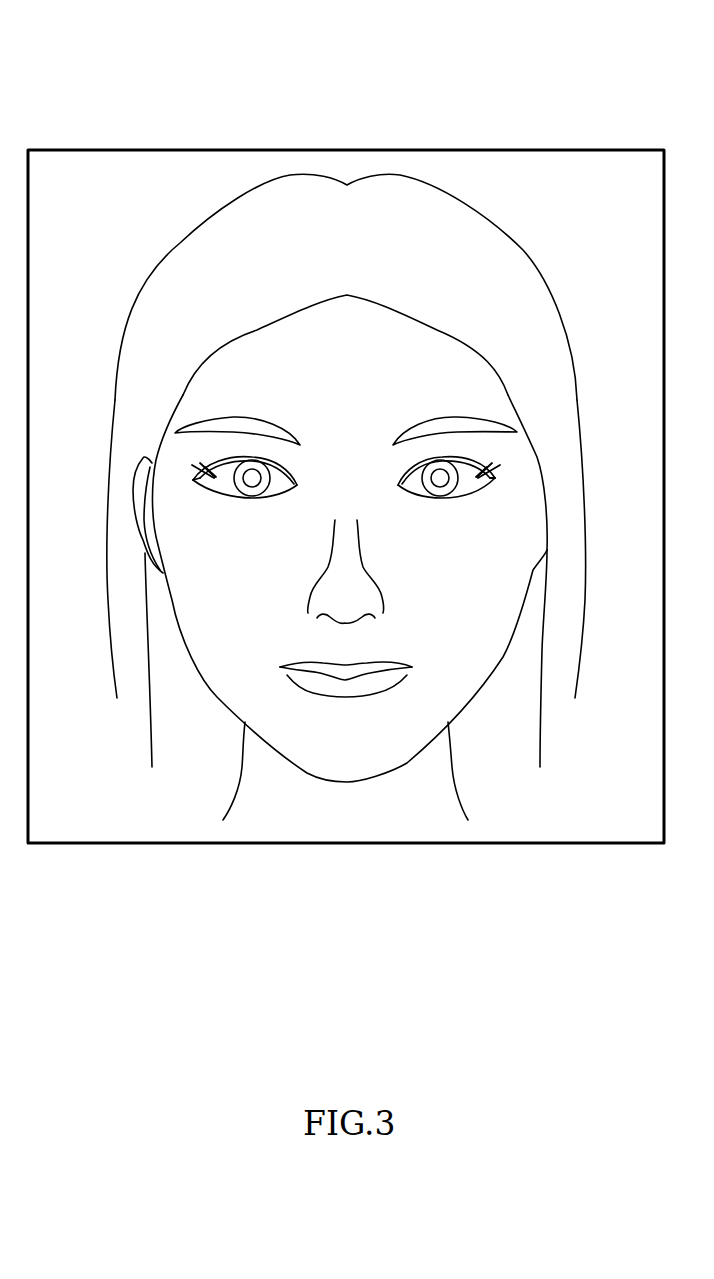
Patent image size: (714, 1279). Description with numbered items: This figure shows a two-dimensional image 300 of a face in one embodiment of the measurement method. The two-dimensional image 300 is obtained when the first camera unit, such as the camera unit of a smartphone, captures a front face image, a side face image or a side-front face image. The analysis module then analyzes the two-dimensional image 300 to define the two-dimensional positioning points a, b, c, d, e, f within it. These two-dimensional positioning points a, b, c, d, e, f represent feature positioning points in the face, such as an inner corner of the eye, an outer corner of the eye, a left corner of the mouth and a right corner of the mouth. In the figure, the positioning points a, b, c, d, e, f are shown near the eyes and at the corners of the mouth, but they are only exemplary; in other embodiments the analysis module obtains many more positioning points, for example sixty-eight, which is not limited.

The two-dimensional image 300 is at (573, 147).
The two-dimensional positioning point a is at (295, 488).
The two-dimensional positioning point b is at (398, 488).
The two-dimensional positioning point c is at (203, 488).
The two-dimensional positioning point d is at (483, 487).
The two-dimensional positioning point e is at (280, 665).
The two-dimensional positioning point f is at (413, 663).